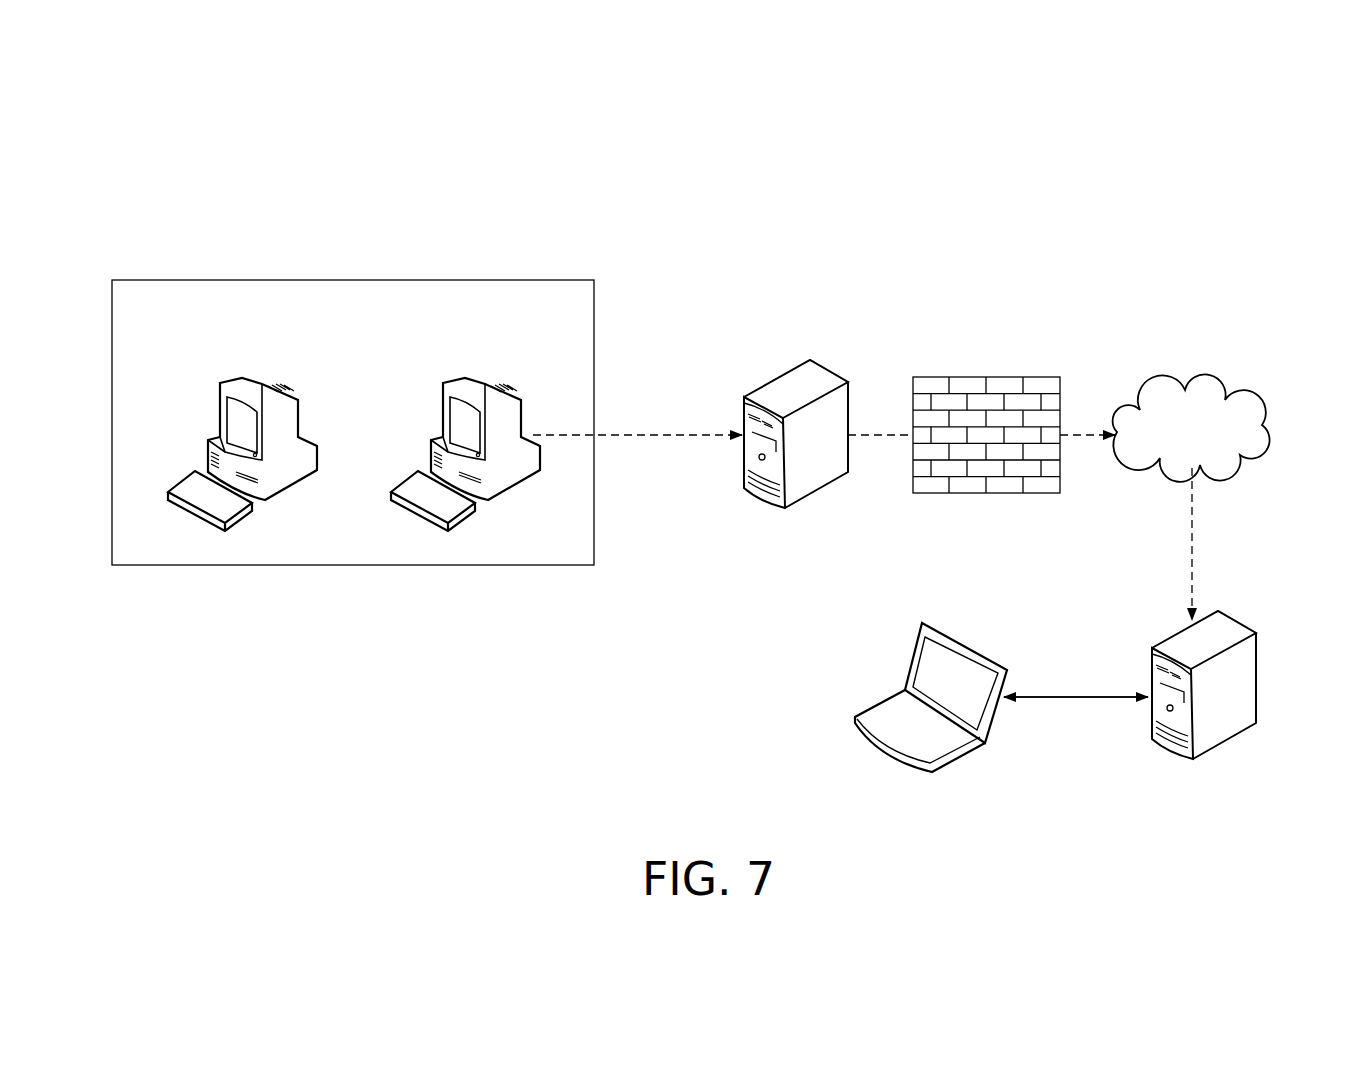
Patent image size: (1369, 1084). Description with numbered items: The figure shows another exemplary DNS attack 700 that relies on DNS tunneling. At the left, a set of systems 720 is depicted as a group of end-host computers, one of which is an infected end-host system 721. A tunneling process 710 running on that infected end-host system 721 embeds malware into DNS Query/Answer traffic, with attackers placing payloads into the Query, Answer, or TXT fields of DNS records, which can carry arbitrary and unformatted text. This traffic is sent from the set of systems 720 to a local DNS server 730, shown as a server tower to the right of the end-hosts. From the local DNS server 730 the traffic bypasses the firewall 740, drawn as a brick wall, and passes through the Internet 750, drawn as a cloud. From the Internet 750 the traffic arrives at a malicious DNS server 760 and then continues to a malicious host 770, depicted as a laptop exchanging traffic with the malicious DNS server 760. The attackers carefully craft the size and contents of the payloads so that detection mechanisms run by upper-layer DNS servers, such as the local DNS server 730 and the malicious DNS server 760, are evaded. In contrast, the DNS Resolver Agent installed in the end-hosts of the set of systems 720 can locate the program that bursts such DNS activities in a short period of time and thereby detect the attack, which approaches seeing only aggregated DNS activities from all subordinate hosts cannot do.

The DNS attack 700 is at (1152, 131).
The tunneling process 710 is at (503, 433).
The set of systems 720 is at (201, 262).
The end-host system 721 is at (421, 404).
The local DNS server 730 is at (826, 360).
The firewall 740 is at (989, 366).
The Internet 750 is at (1215, 440).
The malicious DNS server 760 is at (1235, 608).
The malicious host 770 is at (970, 635).